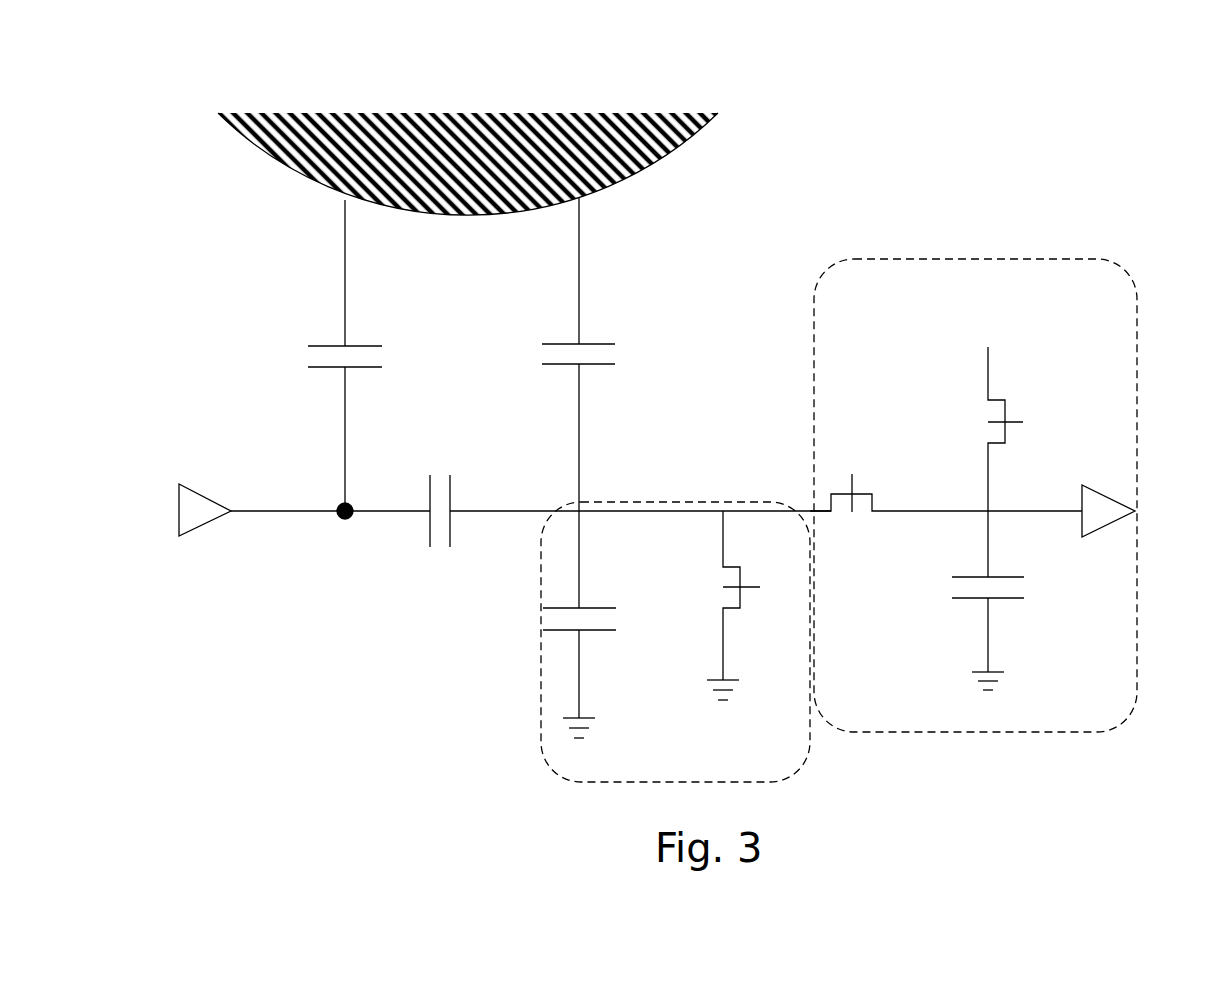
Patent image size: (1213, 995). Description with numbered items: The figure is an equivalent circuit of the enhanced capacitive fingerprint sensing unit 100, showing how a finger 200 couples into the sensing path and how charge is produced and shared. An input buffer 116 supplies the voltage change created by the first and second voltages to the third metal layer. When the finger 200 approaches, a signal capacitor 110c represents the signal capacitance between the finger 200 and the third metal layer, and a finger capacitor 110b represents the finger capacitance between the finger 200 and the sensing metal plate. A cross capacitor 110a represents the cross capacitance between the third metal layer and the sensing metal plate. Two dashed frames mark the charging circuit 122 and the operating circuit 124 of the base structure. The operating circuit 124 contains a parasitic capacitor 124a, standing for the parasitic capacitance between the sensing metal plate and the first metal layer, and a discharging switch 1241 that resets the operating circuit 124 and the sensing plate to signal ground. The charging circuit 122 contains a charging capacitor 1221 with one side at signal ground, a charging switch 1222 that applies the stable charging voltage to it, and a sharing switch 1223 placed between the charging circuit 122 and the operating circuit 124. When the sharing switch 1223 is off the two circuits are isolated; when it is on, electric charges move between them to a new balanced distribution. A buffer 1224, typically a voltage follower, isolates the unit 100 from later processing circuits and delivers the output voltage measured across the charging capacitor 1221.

The enhanced capacitive fingerprint sensing unit 100 is at (1158, 118).
The finger 200 is at (667, 160).
The cross capacitor 110a is at (452, 488).
The finger capacitor 110b is at (590, 344).
The signal capacitor 110c is at (355, 346).
The input buffer 116 is at (209, 522).
The charging circuit 122 is at (1016, 258).
The charging capacitor 1221 is at (978, 600).
The charging switch 1222 is at (996, 400).
The sharing switch 1223 is at (860, 470).
The buffer 1224 is at (1098, 470).
The operating circuit 124 is at (655, 502).
The parasitic capacitor 124a is at (586, 608).
The discharging switch 1241 is at (730, 610).